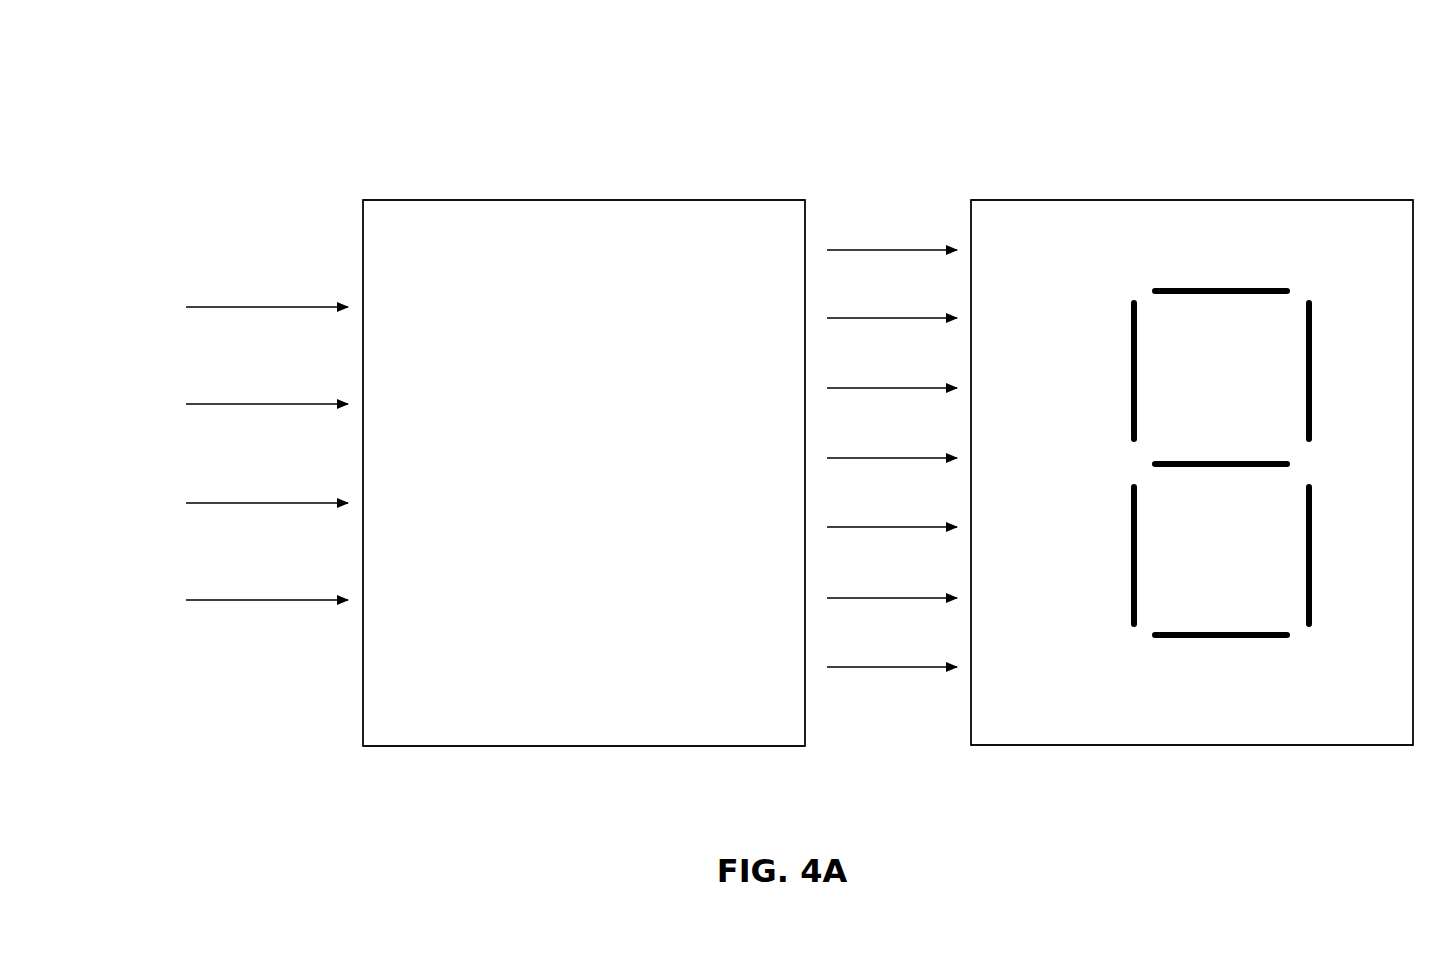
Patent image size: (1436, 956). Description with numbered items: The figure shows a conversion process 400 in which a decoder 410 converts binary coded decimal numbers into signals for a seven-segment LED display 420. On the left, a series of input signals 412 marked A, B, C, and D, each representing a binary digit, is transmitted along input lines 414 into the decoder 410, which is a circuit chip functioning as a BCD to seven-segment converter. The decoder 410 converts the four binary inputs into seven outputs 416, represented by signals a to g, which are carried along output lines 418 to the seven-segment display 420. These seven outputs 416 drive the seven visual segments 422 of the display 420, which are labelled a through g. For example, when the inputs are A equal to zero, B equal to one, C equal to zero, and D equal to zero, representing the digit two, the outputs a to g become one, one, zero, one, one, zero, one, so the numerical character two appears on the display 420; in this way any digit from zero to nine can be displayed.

The conversion process 400 is at (918, 55).
The decoder 410 is at (584, 473).
The input signals 412 is at (156, 272).
The input signal lines to decoder 414 is at (380, 272).
The seven outputs 416 is at (753, 300).
The output signal lines to display 418 is at (987, 235).
The 7 segment LED display 420 is at (1192, 472).
The seven segment digit (segments a-g) 422 is at (1179, 272).